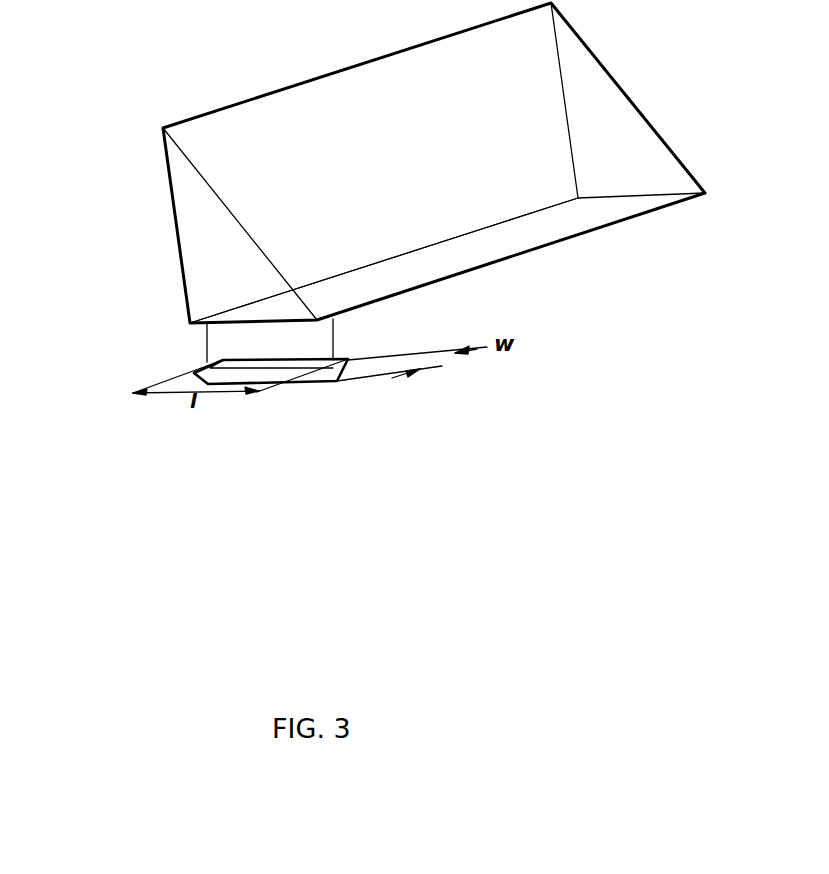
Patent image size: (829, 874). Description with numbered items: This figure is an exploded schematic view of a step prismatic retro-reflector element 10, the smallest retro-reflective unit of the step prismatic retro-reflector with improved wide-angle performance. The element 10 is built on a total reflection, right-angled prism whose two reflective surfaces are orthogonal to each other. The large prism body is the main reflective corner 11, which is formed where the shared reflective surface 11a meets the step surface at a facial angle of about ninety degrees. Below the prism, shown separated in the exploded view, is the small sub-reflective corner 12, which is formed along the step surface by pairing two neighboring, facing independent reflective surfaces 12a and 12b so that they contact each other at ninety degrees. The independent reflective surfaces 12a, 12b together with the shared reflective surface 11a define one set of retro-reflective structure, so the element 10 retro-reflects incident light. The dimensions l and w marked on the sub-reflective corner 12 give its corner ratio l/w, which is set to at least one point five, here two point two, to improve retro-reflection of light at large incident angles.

The step prismatic retro-reflector element 10 is at (373, 236).
The main reflective corner 11 is at (372, 163).
The shared reflective surface 11a is at (198, 202).
The sub-reflective corner 12 is at (453, 394).
The independent reflective surface 12a is at (345, 372).
The independent reflective surface 12b is at (315, 379).